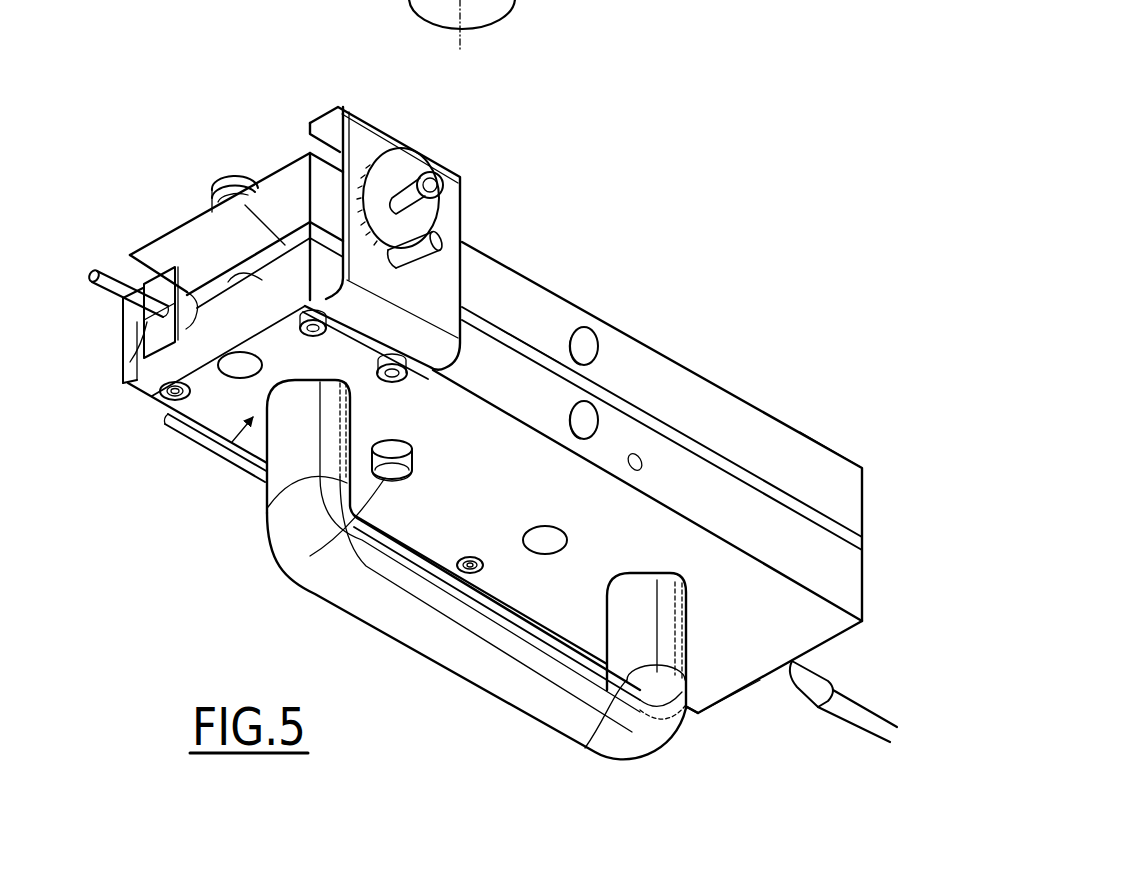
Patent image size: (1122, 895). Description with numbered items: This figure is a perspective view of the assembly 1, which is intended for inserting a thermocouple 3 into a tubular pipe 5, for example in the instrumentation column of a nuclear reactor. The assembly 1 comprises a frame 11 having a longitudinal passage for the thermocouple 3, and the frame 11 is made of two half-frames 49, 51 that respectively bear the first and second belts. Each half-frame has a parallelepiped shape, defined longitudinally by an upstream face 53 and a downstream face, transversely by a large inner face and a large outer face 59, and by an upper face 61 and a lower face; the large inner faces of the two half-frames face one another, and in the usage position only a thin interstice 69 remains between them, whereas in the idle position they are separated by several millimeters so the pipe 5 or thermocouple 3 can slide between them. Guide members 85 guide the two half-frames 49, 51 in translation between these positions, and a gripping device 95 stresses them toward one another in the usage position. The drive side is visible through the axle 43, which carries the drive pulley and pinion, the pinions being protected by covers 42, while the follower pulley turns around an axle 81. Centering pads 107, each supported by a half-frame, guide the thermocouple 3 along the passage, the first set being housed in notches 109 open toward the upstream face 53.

The assembly 1 is at (168, 100).
The frame 11 is at (168, 195).
The centering pad 107 is at (194, 276).
The guide member 85 is at (234, 186).
The upstream face 53 is at (293, 258).
The cover 42 is at (368, 136).
The axle 43 is at (436, 236).
The interstice 69 is at (527, 345).
The axle 81 is at (586, 420).
The half-frame 51 is at (672, 333).
The upper face 61 is at (725, 500).
The large outer face 59 is at (826, 446).
The thermocouple 3 is at (110, 286).
The notch 109 is at (128, 383).
The half-frame 49 is at (223, 446).
The gripping device 95 is at (300, 533).
The tubular pipe 5 is at (800, 700).